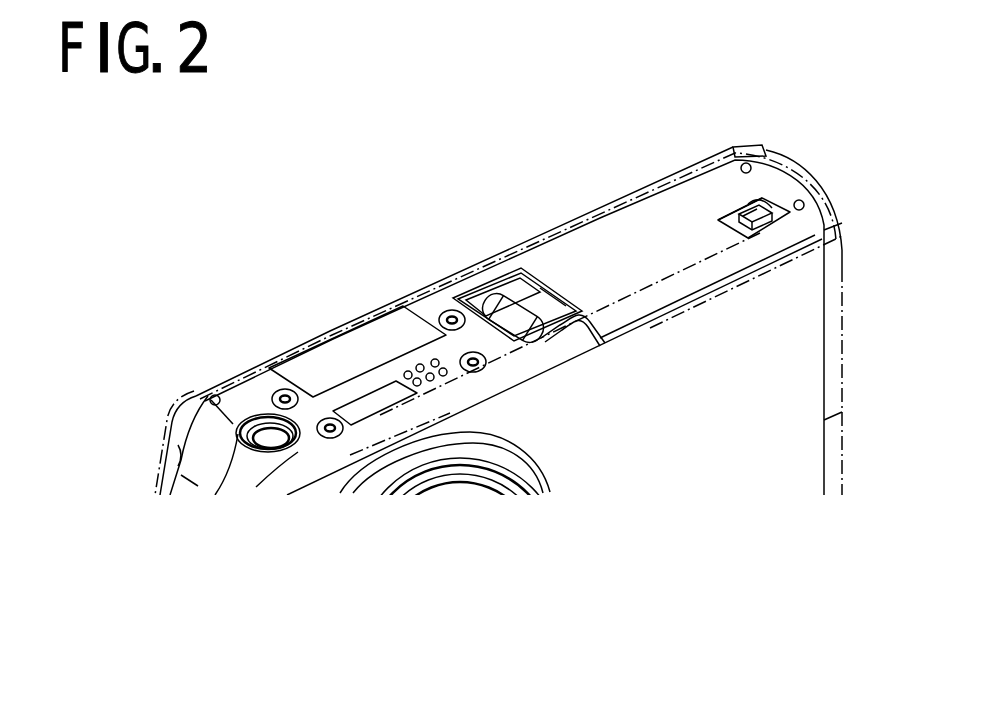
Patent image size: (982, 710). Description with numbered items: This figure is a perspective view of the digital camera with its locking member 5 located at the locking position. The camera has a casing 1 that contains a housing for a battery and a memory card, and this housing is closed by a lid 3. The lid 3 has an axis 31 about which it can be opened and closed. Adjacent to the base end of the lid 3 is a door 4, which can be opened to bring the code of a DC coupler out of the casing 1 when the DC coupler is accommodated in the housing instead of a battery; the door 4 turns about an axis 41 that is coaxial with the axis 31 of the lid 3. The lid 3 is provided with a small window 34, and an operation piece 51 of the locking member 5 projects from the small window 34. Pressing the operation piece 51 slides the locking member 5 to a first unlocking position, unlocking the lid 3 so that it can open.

The casing 1 is at (803, 343).
The lid 3 is at (630, 226).
The door 4 is at (514, 290).
The axis 41 is at (473, 302).
The axis 31 is at (553, 322).
The operation piece 51 is at (768, 211).
The locking member 5 is at (750, 212).
The small window 34 is at (770, 212).